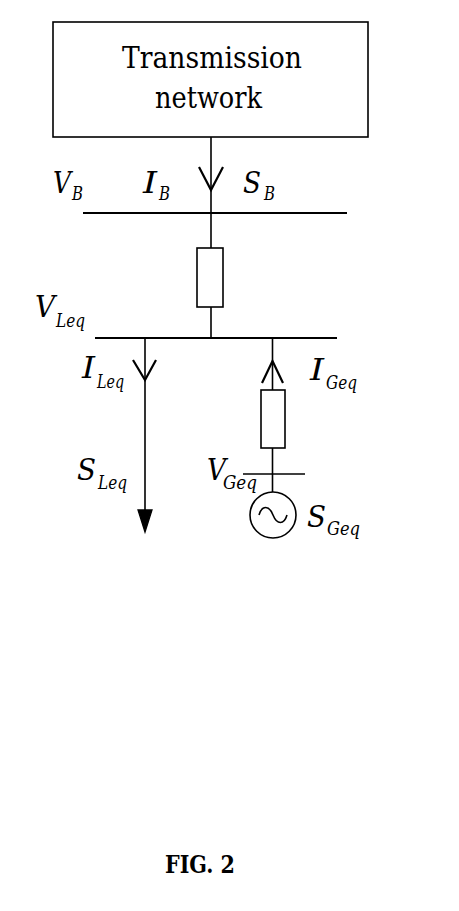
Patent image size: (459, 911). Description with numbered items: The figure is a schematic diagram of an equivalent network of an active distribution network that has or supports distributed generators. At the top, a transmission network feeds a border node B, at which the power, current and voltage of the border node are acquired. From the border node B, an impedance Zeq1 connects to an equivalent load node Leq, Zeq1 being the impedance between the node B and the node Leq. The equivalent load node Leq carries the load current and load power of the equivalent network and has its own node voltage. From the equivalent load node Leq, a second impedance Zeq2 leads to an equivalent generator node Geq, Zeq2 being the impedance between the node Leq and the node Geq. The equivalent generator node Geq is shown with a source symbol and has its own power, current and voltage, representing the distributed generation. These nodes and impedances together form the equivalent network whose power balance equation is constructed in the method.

The border node B is at (216, 192).
The impedance between node B and node Leq Zeq1 is at (243, 277).
The equivalent load node Leq is at (224, 316).
The impedance between node Leq and node Geq Zeq2 is at (309, 419).
The equivalent generator node Geq is at (297, 472).